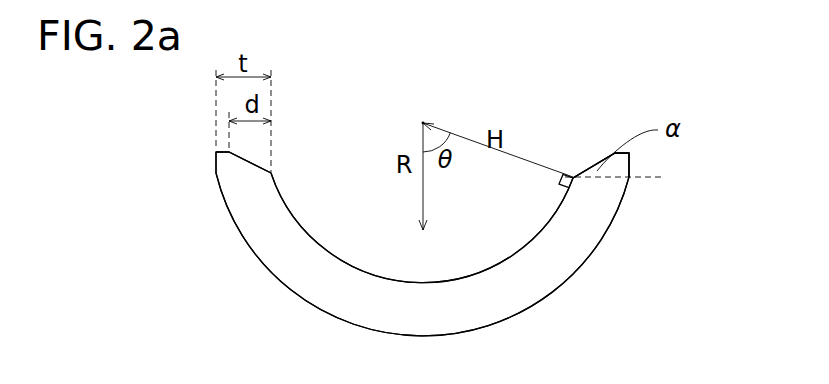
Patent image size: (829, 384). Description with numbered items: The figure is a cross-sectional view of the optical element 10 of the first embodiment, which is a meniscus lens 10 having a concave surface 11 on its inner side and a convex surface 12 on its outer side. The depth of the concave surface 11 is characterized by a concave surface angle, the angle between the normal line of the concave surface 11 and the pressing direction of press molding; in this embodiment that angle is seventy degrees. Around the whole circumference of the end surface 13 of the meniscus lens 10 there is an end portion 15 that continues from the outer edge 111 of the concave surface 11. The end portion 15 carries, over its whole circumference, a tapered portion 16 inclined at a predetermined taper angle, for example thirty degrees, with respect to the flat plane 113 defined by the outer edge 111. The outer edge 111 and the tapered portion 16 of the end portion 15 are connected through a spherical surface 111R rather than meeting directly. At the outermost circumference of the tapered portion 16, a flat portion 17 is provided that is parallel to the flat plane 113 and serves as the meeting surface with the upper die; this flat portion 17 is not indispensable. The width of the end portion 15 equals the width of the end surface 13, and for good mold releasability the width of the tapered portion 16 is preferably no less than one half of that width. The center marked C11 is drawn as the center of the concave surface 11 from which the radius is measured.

The optical element 10 is at (503, 297).
The concave surface 11 is at (448, 280).
The convex surface 12 is at (573, 277).
The end surface 13 is at (615, 178).
The end portion 15 is at (630, 167).
The tapered portion 16 is at (593, 173).
The flat portion 17 is at (625, 150).
The outer edge 111 is at (272, 177).
The spherical surface 111R is at (562, 172).
The flat plane 113 is at (340, 178).
The center of inner circumferential surface C11 is at (422, 121).